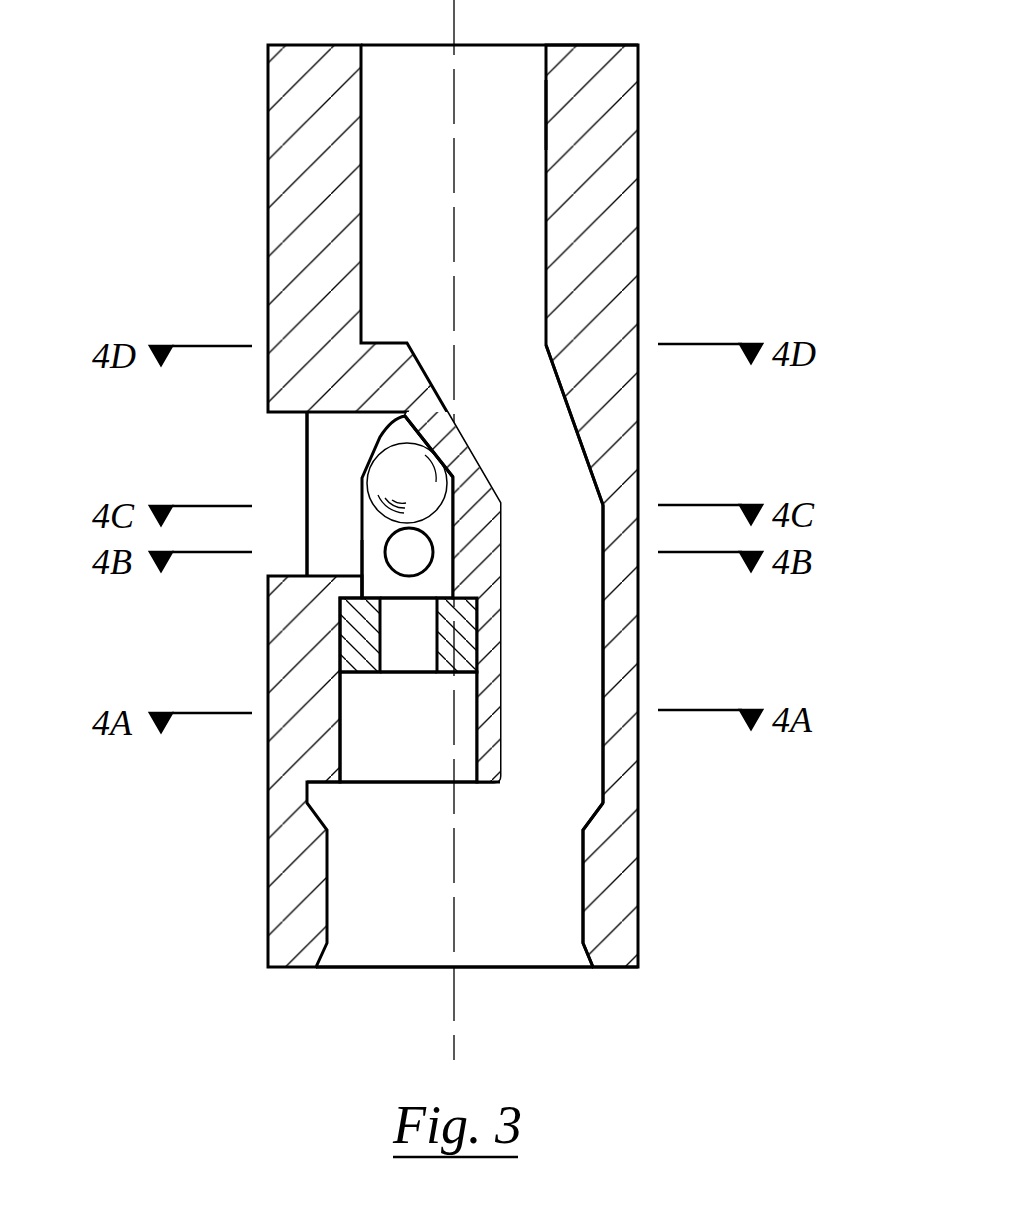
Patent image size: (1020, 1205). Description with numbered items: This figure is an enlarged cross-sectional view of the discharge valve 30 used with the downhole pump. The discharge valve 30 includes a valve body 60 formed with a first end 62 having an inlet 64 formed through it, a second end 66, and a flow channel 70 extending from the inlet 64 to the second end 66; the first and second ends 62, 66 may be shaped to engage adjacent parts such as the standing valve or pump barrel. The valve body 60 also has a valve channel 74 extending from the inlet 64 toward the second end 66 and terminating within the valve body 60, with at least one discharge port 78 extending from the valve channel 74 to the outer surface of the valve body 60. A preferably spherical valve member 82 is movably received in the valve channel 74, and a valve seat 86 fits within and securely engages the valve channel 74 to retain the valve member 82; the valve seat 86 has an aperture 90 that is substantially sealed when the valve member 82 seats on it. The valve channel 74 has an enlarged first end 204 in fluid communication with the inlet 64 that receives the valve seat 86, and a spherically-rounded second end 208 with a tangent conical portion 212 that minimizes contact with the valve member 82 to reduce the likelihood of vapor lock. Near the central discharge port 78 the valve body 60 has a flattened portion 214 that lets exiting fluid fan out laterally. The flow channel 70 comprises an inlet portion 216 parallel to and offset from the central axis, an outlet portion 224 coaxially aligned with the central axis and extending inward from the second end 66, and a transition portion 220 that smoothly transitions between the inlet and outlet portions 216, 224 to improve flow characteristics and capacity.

The discharge valve 30 is at (252, 100).
The valve body 60 is at (622, 188).
The first end 62 is at (640, 936).
The inlet 64 is at (383, 935).
The second end 66 is at (640, 62).
The flow channel 70 is at (362, 248).
The valve channel 74 is at (363, 566).
The discharge port 78 is at (390, 533).
The valve member 82 is at (383, 472).
The valve seat 86 is at (360, 655).
The aperture 90 is at (385, 657).
The first end 204 is at (343, 743).
The second end 208 is at (410, 422).
The conical portion 212 is at (440, 447).
The flattened portion 214 is at (331, 523).
The inlet portion 216 is at (590, 627).
The transition portion 220 is at (567, 427).
The outlet portion 224 is at (540, 108).